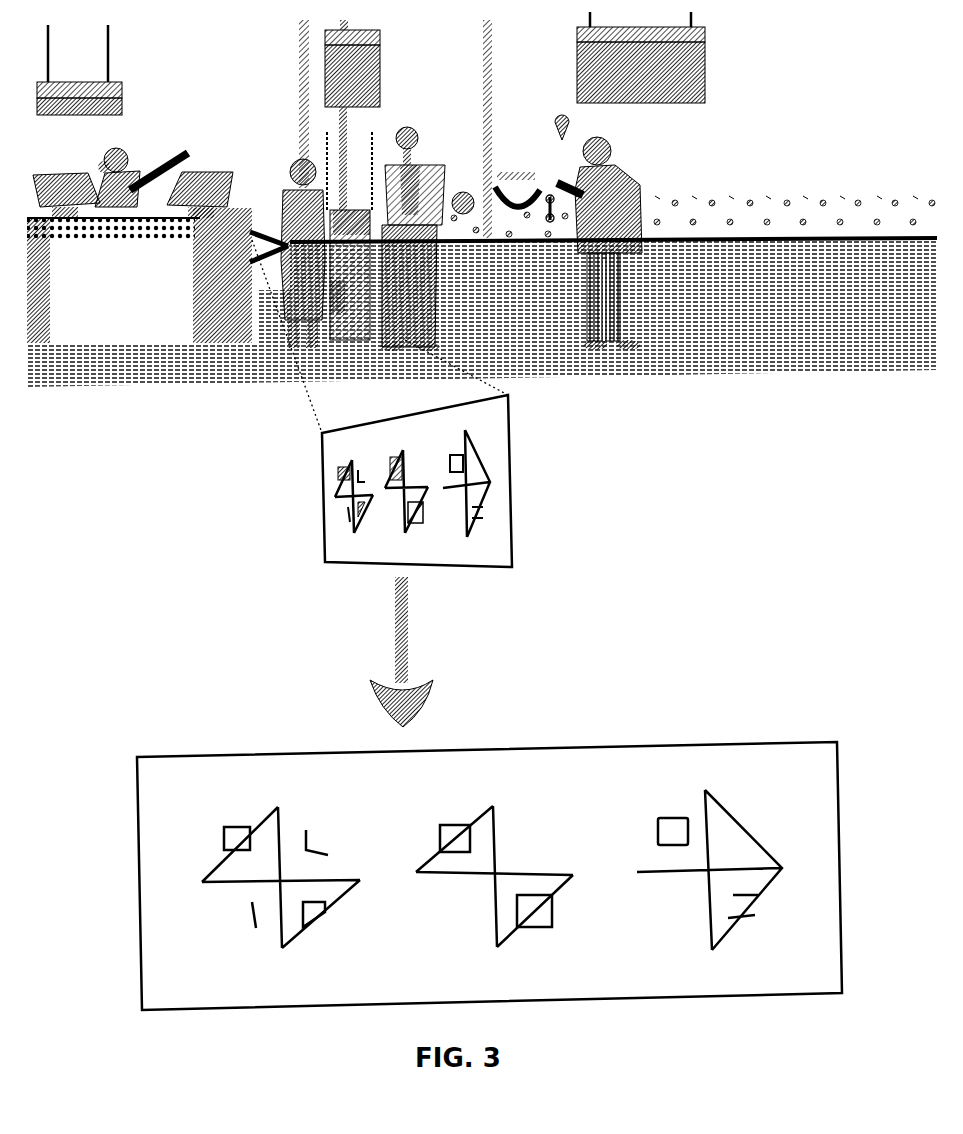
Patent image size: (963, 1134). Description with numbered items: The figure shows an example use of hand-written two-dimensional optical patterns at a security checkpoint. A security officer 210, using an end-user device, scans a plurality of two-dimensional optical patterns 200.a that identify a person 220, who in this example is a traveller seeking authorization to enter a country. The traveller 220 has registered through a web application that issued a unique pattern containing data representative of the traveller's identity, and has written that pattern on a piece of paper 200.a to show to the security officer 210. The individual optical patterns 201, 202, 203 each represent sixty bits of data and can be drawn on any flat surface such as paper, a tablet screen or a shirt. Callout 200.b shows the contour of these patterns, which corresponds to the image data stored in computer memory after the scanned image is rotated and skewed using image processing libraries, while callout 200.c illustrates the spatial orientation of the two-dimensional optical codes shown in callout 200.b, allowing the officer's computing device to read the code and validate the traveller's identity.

The security officer 210 is at (132, 153).
The person 220 is at (298, 152).
The two-dimensional optical patterns 200.a is at (247, 210).
The callout 200.b is at (513, 433).
The callout 200.c is at (485, 747).
The two-dimensional optical pattern 201 is at (335, 517).
The two-dimensional optical pattern 202 is at (387, 458).
The two-dimensional optical pattern 203 is at (493, 503).